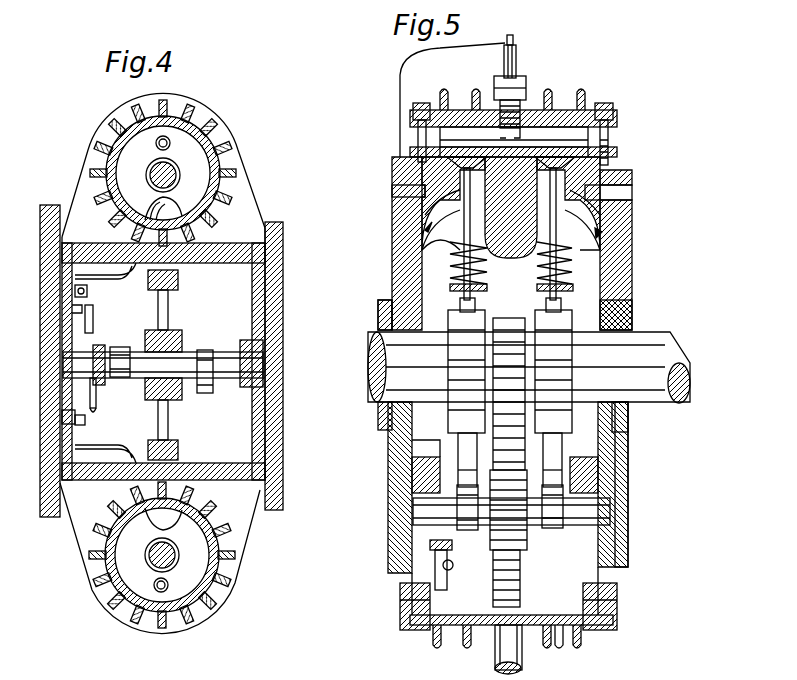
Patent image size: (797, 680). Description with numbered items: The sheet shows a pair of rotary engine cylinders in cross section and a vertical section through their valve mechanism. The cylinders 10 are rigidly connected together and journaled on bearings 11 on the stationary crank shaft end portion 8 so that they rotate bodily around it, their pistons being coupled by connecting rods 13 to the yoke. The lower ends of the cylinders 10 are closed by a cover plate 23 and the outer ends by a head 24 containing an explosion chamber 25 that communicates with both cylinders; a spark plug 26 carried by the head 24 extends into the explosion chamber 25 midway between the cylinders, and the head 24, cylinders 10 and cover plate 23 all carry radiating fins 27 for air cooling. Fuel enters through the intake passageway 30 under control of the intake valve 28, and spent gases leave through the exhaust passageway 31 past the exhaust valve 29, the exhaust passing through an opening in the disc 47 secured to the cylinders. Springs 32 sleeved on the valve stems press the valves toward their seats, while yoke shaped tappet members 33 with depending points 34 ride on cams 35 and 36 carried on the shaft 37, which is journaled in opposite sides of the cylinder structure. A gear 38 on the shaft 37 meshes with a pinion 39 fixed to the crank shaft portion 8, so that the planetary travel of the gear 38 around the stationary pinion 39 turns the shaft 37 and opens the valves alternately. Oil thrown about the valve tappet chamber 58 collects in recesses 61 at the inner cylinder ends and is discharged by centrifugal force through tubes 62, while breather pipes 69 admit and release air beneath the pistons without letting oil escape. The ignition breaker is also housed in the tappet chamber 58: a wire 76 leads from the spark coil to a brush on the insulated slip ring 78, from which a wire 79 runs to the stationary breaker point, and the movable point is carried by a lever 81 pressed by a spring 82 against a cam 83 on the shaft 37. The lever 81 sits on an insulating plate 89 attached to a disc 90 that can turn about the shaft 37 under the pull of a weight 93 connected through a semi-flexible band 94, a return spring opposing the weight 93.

In FIG. 5, the crank shaft end portion 8 is at (668, 345).
In FIG. 4, the cylinders 10 is at (202, 167).
In FIG. 5, the bearings 11 is at (385, 326).
In FIG. 4, the connecting rods 13 is at (150, 174).
In FIG. 5, the connecting rods 13 is at (522, 660).
In FIG. 5, the cover plate 23 is at (563, 640).
In FIG. 5, the head 24 is at (562, 110).
In FIG. 5, the explosion chamber 25 is at (525, 128).
In FIG. 5, the spark plug 26 is at (520, 52).
In FIG. 4, the radiating fins 27 is at (202, 112).
In FIG. 5, the radiating fins 27 is at (583, 97).
In FIG. 5, the intake valve 28 is at (453, 147).
In FIG. 5, the exhaust valve 29 is at (577, 140).
In FIG. 5, the intake passageway 30 is at (425, 205).
In FIG. 5, the exhaust passageway 31 is at (600, 222).
In FIG. 5, the springs 32 is at (536, 272).
In FIG. 5, the tappet members 33 is at (535, 312).
In FIG. 5, the depending points 34 is at (465, 475).
In FIG. 4, the cam 35 is at (120, 346).
In FIG. 5, the cam 35 is at (467, 531).
In FIG. 4, the cam 36 is at (205, 392).
In FIG. 5, the cam 36 is at (553, 529).
In FIG. 4, the shaft 37 is at (258, 363).
In FIG. 4, the gear 38 is at (176, 433).
In FIG. 5, the gear 38 is at (513, 574).
In FIG. 5, the pinion 39 is at (628, 418).
In FIG. 4, the disc 47 is at (284, 443).
In FIG. 5, the disc 47 is at (628, 545).
In FIG. 4, the valve tappet chamber 58 is at (250, 292).
In FIG. 5, the valve tappet chamber 58 is at (597, 302).
In FIG. 4, the recesses 61 is at (173, 212).
In FIG. 4, the tubes 62 is at (128, 279).
In FIG. 4, the breather pipes 69 is at (157, 139).
In FIG. 5, the wire 76 is at (425, 450).
In FIG. 5, the slip ring 78 is at (383, 306).
In FIG. 4, the wire 79 is at (75, 418).
In FIG. 4, the lever 81 is at (98, 390).
In FIG. 5, the spring 82 is at (448, 570).
In FIG. 4, the cam 83 is at (65, 366).
In FIG. 5, the cam 83 is at (450, 512).
In FIG. 4, the insulating plate 89 is at (82, 422).
In FIG. 5, the insulating plate 89 is at (438, 565).
In FIG. 4, the disc 90 is at (93, 320).
In FIG. 4, the weight 93 is at (87, 291).
In FIG. 4, the semi-flexible band 94 is at (77, 307).
In FIG. 5, the semi-flexible band 94 is at (438, 548).